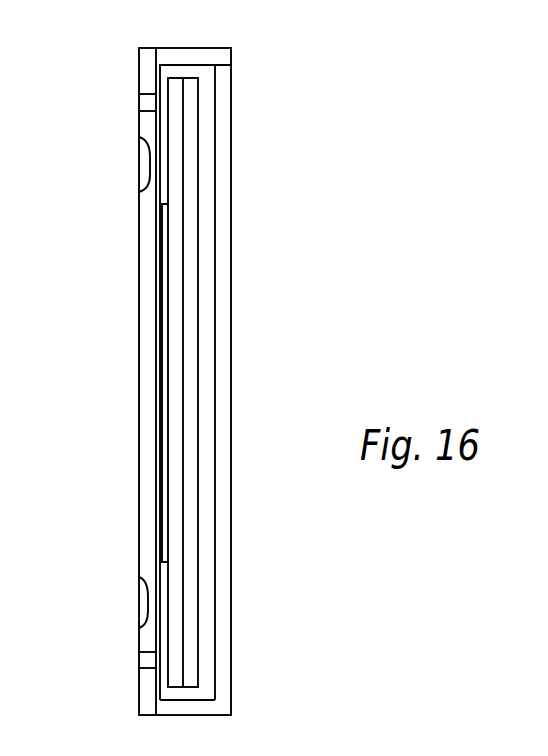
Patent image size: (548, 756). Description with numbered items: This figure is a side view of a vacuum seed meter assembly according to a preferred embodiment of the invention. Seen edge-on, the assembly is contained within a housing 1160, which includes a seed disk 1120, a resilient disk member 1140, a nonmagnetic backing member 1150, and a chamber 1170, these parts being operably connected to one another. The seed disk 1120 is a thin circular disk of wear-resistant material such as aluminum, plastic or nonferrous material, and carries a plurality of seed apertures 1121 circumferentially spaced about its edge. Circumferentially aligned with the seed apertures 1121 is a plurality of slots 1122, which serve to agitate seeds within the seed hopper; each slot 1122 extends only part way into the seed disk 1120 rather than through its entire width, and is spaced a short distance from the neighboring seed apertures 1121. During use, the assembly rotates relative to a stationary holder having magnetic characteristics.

The seed disk 1120 is at (146, 53).
The seed apertures 1121 is at (143, 101).
The slots 1122 is at (148, 601).
The resilient disk member 1140 is at (172, 78).
The nonmagnetic backing member 1150 is at (188, 78).
The housing 1160 is at (231, 165).
The chamber 1170 is at (232, 65).